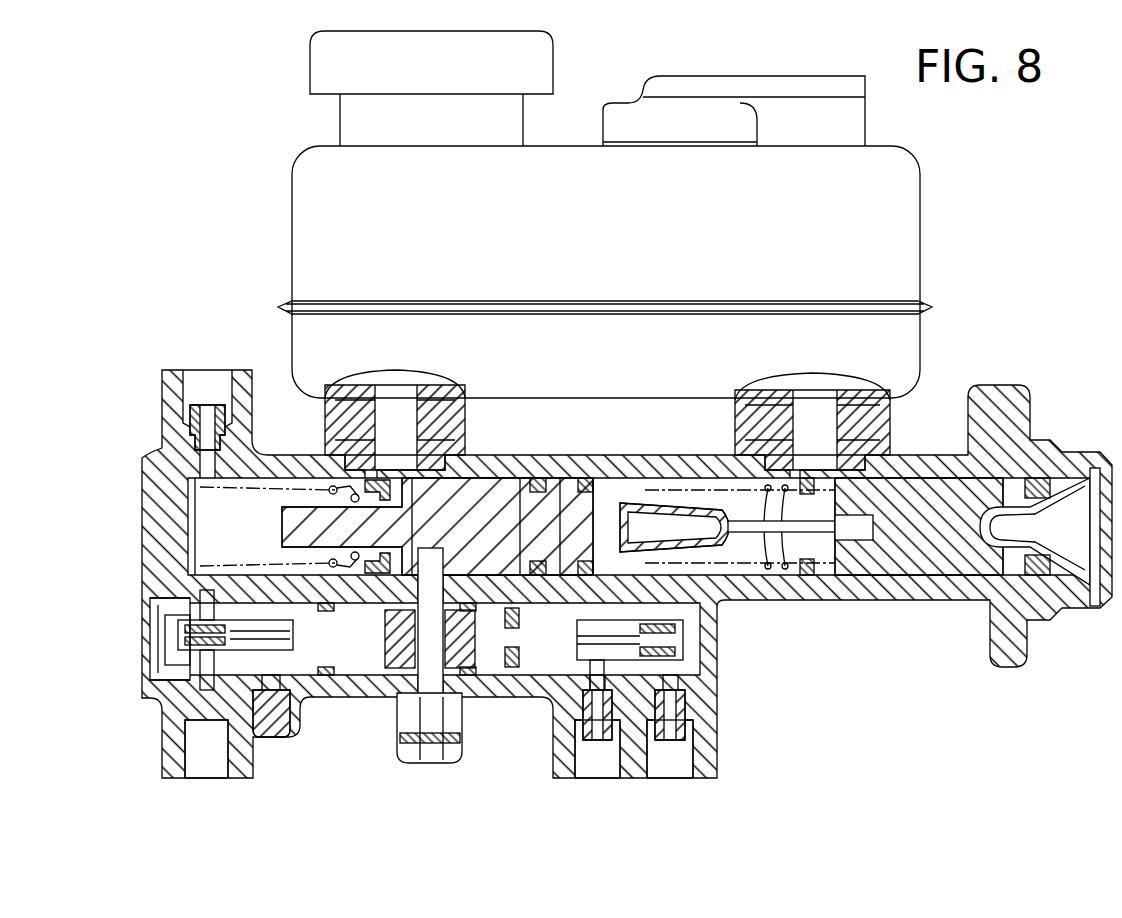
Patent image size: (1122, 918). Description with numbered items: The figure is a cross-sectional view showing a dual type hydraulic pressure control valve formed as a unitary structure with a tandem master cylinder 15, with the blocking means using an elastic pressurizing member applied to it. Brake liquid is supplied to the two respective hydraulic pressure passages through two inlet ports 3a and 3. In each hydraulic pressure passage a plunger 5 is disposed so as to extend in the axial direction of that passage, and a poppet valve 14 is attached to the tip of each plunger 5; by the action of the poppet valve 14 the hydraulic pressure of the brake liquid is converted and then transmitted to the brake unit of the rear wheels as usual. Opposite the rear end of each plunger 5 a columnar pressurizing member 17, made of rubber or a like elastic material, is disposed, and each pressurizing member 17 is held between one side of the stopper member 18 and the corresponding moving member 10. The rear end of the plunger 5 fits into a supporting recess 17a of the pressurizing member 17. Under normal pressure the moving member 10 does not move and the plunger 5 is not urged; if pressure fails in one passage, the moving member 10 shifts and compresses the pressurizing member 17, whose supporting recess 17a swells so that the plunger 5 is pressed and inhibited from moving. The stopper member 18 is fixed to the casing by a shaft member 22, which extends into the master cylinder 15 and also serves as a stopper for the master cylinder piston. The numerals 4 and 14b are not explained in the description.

The inlet port 3 is at (718, 620).
The inlet port 3a is at (200, 602).
The outlet port 4 is at (220, 760).
The plunger 5 is at (517, 605).
The moving member 10 is at (490, 605).
The poppet valve 14 is at (180, 632).
The valve stem 14b is at (205, 660).
The master cylinder 15 is at (897, 465).
The pressurizing member 17 is at (395, 655).
The supporting recess 17a is at (350, 688).
The stopper member 18 is at (422, 640).
The shaft member 22 is at (383, 555).